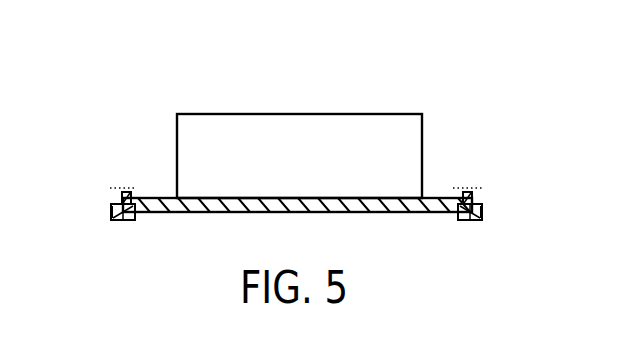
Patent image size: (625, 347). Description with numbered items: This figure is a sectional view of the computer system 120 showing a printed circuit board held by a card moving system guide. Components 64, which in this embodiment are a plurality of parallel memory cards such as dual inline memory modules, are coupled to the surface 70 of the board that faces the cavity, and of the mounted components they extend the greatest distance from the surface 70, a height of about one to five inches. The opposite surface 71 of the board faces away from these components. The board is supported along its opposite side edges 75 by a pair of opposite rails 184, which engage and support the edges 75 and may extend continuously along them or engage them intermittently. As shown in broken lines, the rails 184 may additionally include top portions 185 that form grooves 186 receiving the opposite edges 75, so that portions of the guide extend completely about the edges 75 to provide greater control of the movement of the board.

The semiconductor package assembly 120 is at (438, 66).
The components 64 is at (307, 123).
The surface 70 is at (436, 198).
The surface 71 is at (307, 212).
The opposite side edges 75 is at (112, 210).
The rails 184 is at (125, 221).
The top portions 185 is at (110, 198).
The grooves 186 is at (127, 193).